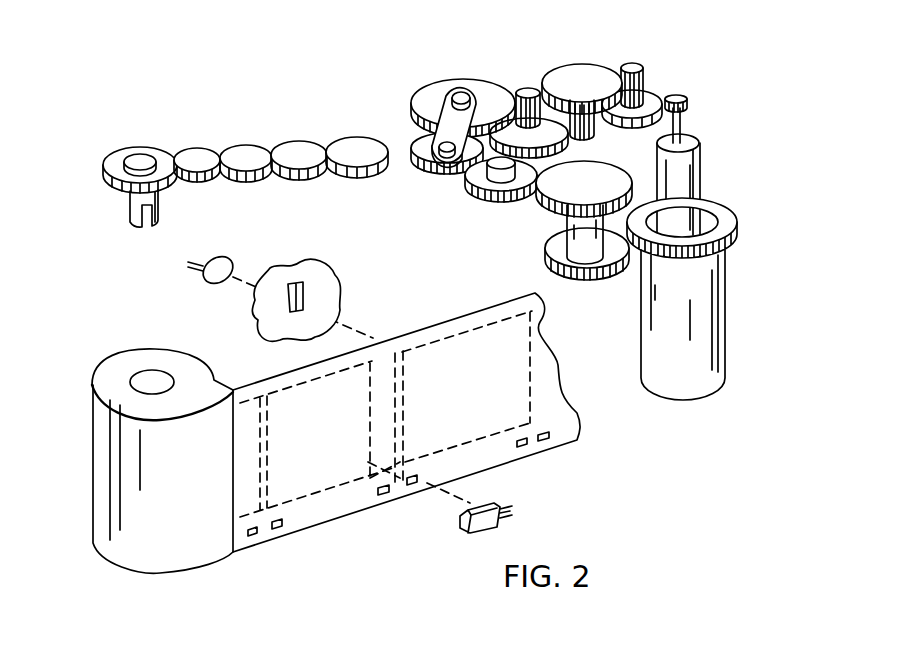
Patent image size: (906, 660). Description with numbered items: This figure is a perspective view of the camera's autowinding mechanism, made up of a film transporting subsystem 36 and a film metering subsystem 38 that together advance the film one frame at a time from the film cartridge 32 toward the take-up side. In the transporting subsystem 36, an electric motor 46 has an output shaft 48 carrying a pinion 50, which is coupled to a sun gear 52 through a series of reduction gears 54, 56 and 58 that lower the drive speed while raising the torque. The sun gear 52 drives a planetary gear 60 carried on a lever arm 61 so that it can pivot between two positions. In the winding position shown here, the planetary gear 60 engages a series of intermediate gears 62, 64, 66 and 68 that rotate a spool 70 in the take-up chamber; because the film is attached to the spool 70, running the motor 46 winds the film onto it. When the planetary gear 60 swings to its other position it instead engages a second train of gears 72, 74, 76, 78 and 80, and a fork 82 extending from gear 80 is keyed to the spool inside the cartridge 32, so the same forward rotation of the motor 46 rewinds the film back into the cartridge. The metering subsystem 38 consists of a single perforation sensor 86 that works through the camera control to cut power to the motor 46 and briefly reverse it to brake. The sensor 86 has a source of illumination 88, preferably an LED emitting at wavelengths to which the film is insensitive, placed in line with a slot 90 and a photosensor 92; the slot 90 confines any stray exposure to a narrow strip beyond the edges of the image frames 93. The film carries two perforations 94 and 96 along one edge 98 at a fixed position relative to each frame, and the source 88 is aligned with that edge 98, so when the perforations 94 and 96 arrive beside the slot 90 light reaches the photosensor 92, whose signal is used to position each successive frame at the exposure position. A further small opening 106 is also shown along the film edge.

The film cartridge 32 is at (198, 553).
The film transporting subsystem 36 is at (432, 215).
The film metering subsystem 38 is at (188, 304).
The electric motor 46 is at (692, 172).
The output shaft 48 is at (677, 127).
The pinion 50 is at (677, 98).
The sun gear 52 is at (483, 83).
The reduction gear 54 is at (635, 63).
The reduction gear 56 is at (583, 70).
The reduction gear 58 is at (527, 87).
The planetary gear 60 is at (417, 147).
The lever arm 61 is at (443, 108).
The intermediate gear 62 is at (515, 187).
The intermediate gear 64 is at (608, 173).
The intermediate gear 66 is at (605, 260).
The intermediate gear 68 is at (720, 212).
The spool 70 is at (725, 322).
The rewinding gear 72 is at (343, 138).
The rewinding gear 74 is at (290, 142).
The rewinding gear 76 is at (242, 146).
The rewinding gear 78 is at (193, 148).
The rewinding gear 80 is at (113, 159).
The fork 82 is at (128, 213).
The perforation sensor 86 is at (517, 505).
The source of illumination 88 is at (222, 263).
The slot 90 is at (333, 292).
The photosensor 92 is at (460, 527).
The image frame 93 is at (521, 394).
The perforation 94 is at (413, 485).
The perforation 96 is at (385, 495).
The film edge 98 is at (327, 513).
The perforation 106 is at (278, 528).